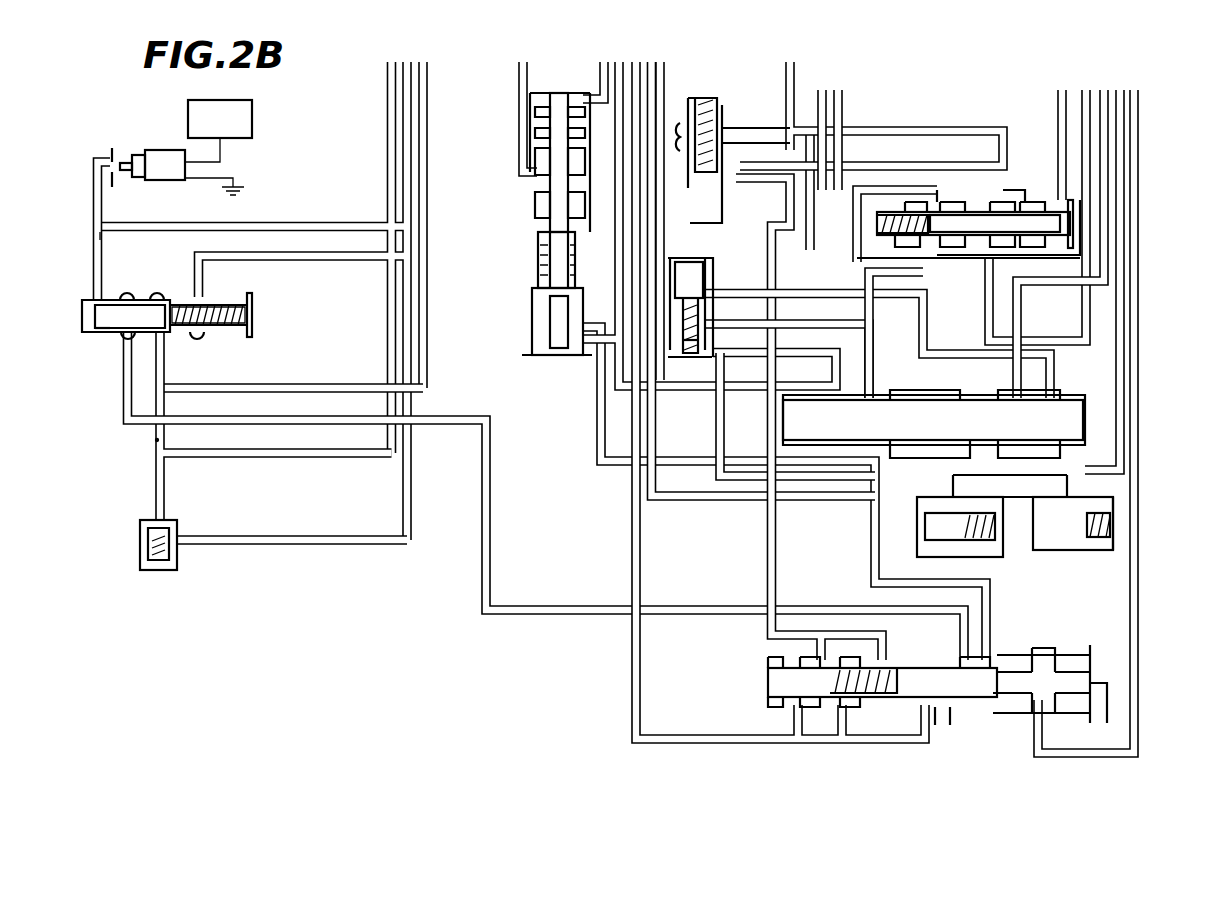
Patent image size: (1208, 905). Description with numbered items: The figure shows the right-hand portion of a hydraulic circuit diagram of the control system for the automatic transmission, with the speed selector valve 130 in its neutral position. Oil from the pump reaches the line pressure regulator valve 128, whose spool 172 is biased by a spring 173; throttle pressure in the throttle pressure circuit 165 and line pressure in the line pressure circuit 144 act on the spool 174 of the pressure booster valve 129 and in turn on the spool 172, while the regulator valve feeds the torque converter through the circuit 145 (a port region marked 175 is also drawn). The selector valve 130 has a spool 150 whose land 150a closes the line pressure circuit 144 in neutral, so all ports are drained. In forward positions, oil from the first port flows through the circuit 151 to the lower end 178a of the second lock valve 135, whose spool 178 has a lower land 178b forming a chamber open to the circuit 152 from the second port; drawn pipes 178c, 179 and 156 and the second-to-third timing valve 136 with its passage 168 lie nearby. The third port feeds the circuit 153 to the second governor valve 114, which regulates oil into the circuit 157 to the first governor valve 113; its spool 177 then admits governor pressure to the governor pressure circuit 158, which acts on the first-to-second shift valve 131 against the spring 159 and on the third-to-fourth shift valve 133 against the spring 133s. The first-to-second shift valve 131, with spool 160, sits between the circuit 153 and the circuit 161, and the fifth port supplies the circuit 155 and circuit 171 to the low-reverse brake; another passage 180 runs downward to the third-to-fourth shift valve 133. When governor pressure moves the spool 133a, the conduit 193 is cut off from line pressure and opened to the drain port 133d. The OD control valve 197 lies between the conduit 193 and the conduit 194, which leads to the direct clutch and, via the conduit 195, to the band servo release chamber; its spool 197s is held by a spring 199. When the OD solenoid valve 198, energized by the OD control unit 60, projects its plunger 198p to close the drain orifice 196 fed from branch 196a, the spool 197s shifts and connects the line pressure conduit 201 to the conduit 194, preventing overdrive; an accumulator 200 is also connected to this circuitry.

The OD control unit 60 is at (270, 109).
The drain orifice 196 is at (113, 160).
The passage branch 196a is at (110, 233).
The OD solenoid valve 198 is at (172, 182).
The plunger 198p is at (122, 178).
The line pressure conduit 201 is at (400, 146).
The OD control valve 197 is at (74, 326).
The spool 197s is at (100, 336).
The oil conduit 194 is at (165, 366).
The spring 199 is at (240, 326).
The conduit 195 is at (290, 386).
The accumulator 200 is at (157, 575).
The oil conduit 193 is at (568, 614).
The circuit 145 is at (519, 90).
The passage 175 is at (592, 130).
The spool 172 is at (540, 124).
The line pressure regulator valve 128 is at (531, 186).
The spring 173 is at (540, 281).
The spool 174 is at (545, 357).
The pressure booster valve 129 is at (565, 358).
The line pressure circuit 144 is at (598, 425).
The throttle pressure circuit 165 is at (640, 272).
The 2-3 timing valve 136 is at (720, 176).
The second lock valve 135 is at (703, 256).
The spool 178 is at (697, 282).
The lower end 178a is at (686, 342).
The lower land 178b is at (700, 297).
The passage 178c is at (758, 262).
The circuit 152 is at (714, 300).
The passage 179 is at (704, 342).
The passage 156 is at (690, 392).
The circuit 151 is at (724, 426).
The passage 168 is at (908, 150).
The spring 159 is at (880, 217).
The spool 160 is at (978, 218).
The circuit 161 is at (856, 258).
The circuit 171 is at (962, 250).
The 1-2 shift valve 131 is at (1076, 231).
The circuit 153 is at (873, 322).
The circuit 155 is at (1024, 336).
The governor pressure circuit 158 is at (1139, 318).
The spool 150 is at (1082, 430).
The land 150a is at (973, 400).
The speed selector valve 130 is at (1101, 406).
The passage 180 is at (768, 541).
The second governor valve 114 is at (916, 536).
The circuit 157 is at (1020, 490).
The first governor valve 113 is at (1068, 553).
The spool 177 is at (1072, 525).
The 3-4 shift valve 133 is at (1080, 645).
The spool 133a is at (1018, 665).
The spring 133s is at (856, 692).
The drain port 133d is at (950, 726).